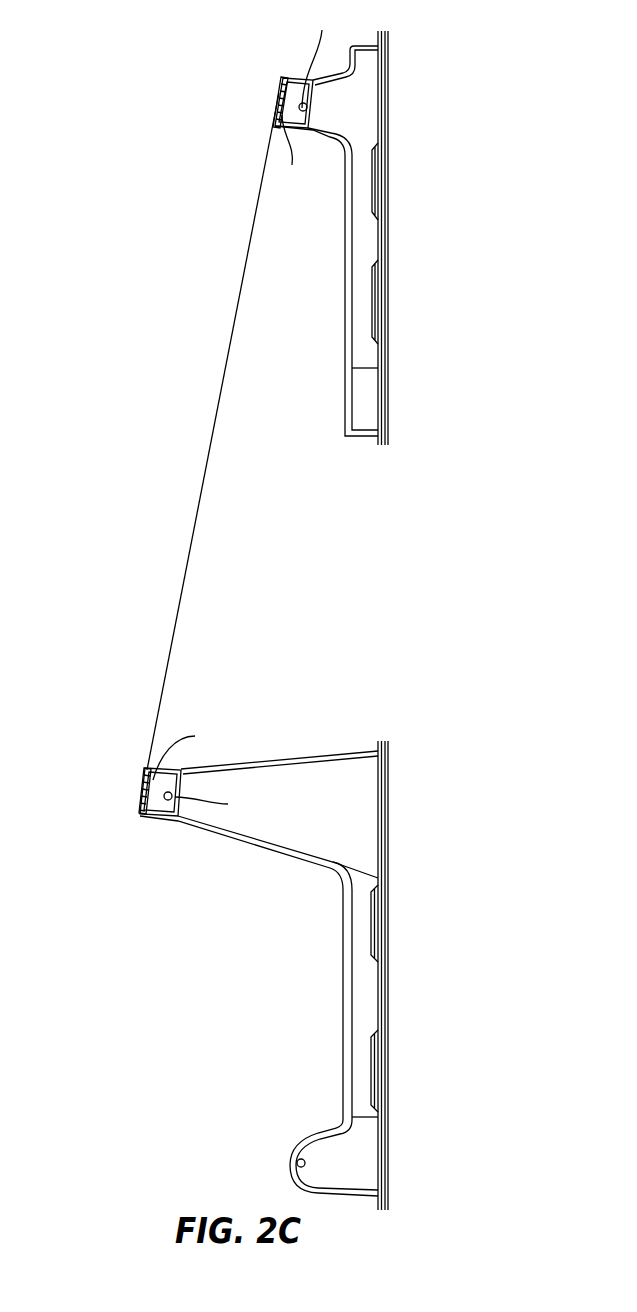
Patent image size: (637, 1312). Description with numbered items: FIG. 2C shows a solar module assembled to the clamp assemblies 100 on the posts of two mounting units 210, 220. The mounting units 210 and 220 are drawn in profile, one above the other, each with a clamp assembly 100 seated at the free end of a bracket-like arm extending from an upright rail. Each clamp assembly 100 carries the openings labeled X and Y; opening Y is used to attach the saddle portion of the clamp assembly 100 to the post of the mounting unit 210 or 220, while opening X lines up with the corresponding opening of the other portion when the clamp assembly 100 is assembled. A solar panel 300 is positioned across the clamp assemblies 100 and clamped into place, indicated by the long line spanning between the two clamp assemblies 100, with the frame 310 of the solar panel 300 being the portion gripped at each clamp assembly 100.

The clamp assembly 100 is at (280, 88).
The mounting unit 210 is at (389, 93).
The mounting unit 220 is at (389, 823).
The solar panel 300 is at (219, 358).
The frame 310 is at (277, 103).